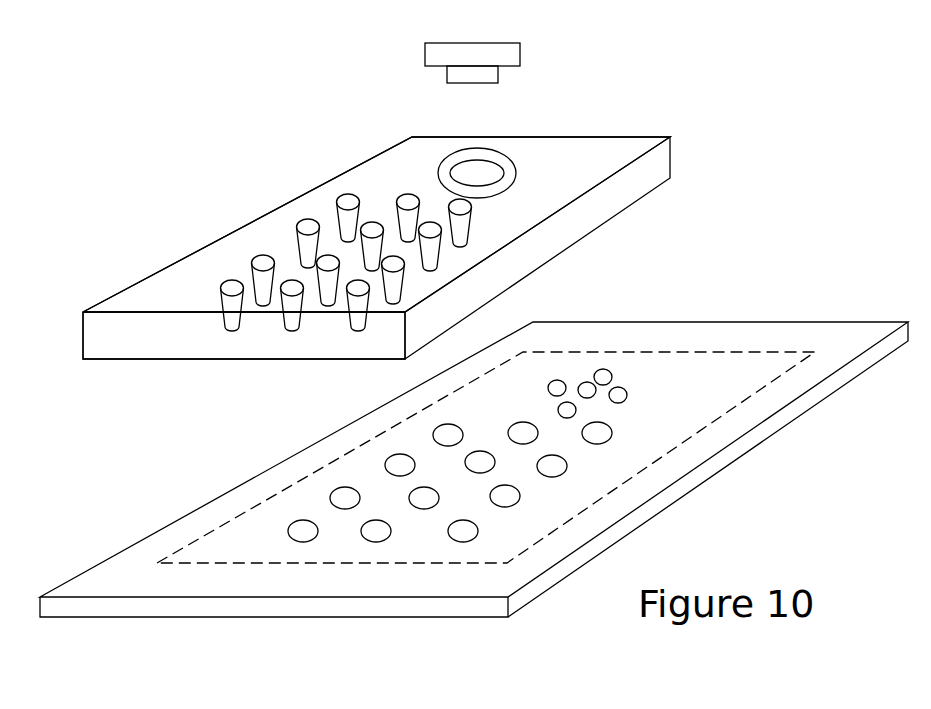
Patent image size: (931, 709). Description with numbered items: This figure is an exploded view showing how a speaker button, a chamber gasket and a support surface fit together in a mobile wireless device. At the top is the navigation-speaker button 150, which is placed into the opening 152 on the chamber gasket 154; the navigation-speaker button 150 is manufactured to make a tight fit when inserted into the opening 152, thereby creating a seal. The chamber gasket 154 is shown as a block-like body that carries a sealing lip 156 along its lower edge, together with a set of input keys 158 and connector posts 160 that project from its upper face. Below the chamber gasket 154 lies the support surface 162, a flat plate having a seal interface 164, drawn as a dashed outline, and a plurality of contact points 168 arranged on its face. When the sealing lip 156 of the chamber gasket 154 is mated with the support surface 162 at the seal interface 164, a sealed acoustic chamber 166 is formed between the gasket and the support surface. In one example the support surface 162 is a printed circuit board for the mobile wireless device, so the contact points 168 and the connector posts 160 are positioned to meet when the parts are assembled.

The navigation-speaker button 150 is at (497, 43).
The opening 152 is at (490, 162).
The chamber gasket 154 is at (623, 139).
The sealing lip 156 is at (83, 342).
The input keys 158 is at (462, 207).
The connector posts 160 is at (437, 252).
The support surface 162 is at (275, 603).
The seal interface 164 is at (550, 539).
The sealed acoustic chamber 166 is at (190, 290).
The contact points 168 is at (610, 433).